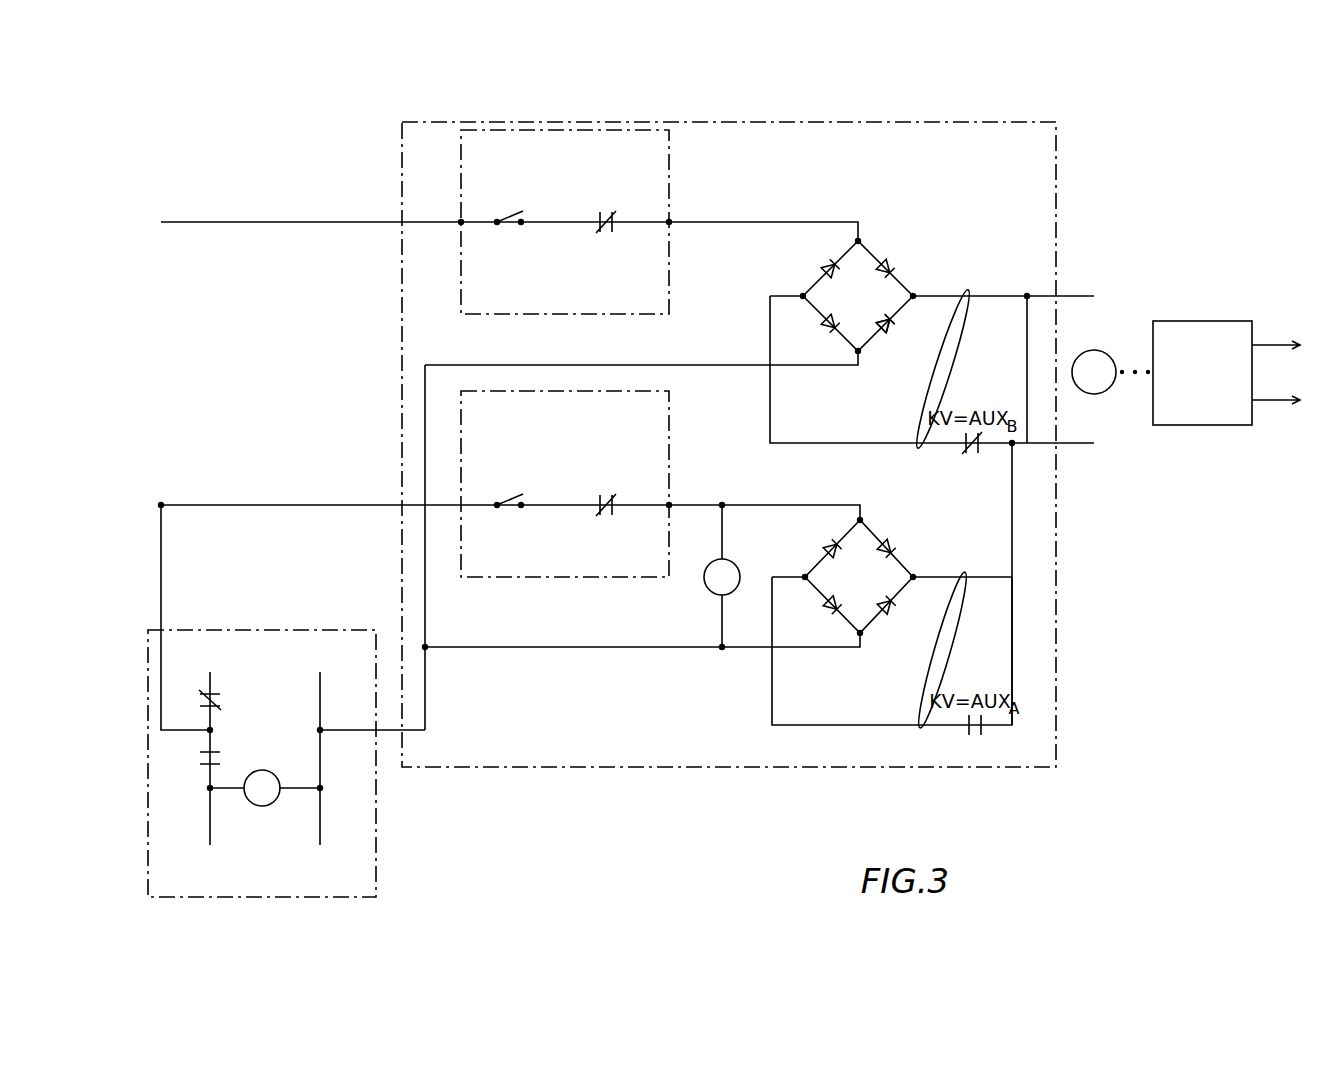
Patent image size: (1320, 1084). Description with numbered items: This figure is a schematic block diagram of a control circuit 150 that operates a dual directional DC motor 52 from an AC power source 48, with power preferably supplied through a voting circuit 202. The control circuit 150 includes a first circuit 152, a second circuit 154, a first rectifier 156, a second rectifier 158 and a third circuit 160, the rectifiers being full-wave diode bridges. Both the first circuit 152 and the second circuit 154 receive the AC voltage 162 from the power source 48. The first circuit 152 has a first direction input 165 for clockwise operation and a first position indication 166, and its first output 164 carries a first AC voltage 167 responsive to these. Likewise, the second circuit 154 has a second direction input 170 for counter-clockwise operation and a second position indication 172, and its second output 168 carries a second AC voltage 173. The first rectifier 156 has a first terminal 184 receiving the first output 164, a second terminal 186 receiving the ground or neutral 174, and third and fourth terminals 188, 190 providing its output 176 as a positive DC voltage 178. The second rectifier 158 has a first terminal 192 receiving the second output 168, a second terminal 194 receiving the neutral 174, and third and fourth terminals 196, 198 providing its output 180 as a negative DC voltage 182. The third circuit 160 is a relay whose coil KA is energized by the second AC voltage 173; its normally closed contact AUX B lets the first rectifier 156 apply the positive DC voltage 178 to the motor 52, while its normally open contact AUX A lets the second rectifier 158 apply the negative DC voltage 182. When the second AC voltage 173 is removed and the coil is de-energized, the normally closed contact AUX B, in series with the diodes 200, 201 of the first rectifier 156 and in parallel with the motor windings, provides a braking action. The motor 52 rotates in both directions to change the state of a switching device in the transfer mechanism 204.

The AC power source 48 is at (376, 828).
The dual directional DC motor 52 is at (1110, 358).
The control circuit 150 is at (1056, 745).
The first circuit 152 is at (669, 302).
The second circuit 154 is at (669, 406).
The first rectifier 156 is at (876, 308).
The second rectifier 158 is at (878, 589).
The third circuit 160 is at (703, 600).
The AC voltage 162 is at (364, 221).
The first output 164 is at (671, 226).
The first direction input 165 is at (508, 214).
The first position indication 166 is at (613, 235).
The first AC voltage 167 is at (757, 220).
The second output 168 is at (672, 502).
The second direction input 170 is at (508, 497).
The second position indication 172 is at (613, 518).
The second AC voltage 173 is at (788, 503).
The ground or neutral 174 is at (425, 612).
The first rectifier output 176 is at (960, 290).
The positive DC voltage 178 is at (1003, 296).
The second rectifier output 180 is at (962, 574).
The negative DC voltage 182 is at (1000, 580).
The first terminal 184 is at (862, 238).
The second terminal 186 is at (862, 354).
The third terminal 188 is at (915, 292).
The fourth terminal 190 is at (800, 292).
The first terminal 192 is at (864, 517).
The second terminal 194 is at (864, 636).
The third terminal 196 is at (915, 573).
The fourth terminal 198 is at (802, 573).
The diode 200 is at (890, 327).
The diode 201 is at (826, 328).
The voting circuit 202 is at (236, 723).
The transfer mechanism 204 is at (1220, 321).